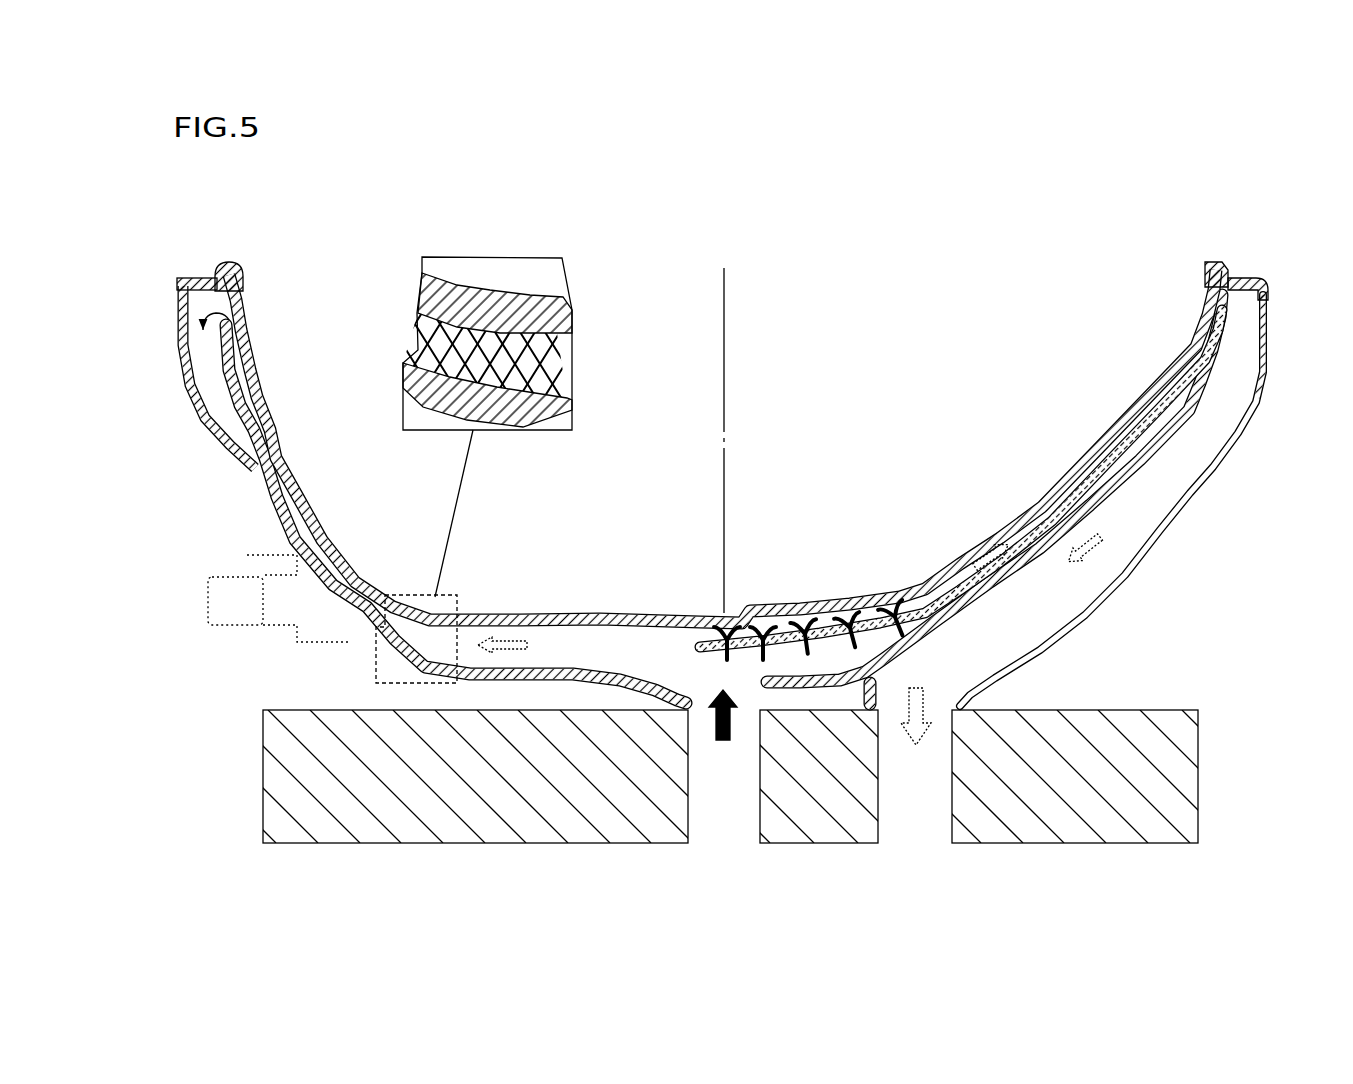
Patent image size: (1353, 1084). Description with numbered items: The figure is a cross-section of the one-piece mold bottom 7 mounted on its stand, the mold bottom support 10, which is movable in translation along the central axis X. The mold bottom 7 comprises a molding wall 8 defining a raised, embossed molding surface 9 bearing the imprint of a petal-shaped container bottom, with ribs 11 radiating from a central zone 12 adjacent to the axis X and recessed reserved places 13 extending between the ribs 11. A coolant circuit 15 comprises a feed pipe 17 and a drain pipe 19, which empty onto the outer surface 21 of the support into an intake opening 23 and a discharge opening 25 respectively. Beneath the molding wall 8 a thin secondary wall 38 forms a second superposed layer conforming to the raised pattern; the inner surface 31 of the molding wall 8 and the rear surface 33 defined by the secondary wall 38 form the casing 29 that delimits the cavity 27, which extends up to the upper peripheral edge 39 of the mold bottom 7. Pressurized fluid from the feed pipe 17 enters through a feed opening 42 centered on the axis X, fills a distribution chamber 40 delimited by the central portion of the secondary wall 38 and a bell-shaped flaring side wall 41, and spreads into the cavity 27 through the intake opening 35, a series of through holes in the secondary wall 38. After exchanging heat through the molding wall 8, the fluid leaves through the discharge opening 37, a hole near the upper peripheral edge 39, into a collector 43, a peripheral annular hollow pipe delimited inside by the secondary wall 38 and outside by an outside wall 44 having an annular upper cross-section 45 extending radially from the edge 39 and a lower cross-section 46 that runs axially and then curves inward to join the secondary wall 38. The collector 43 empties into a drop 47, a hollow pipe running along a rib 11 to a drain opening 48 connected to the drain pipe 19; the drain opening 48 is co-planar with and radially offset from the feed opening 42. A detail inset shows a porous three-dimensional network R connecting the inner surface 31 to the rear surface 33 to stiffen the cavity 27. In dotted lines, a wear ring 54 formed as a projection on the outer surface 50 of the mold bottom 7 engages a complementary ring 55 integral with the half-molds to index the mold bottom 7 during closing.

The mold bottom 7 is at (710, 479).
The molding wall 8 is at (721, 435).
The molding surface 9 is at (716, 488).
The mold bottom support 10 is at (263, 808).
The ribs 11 is at (1058, 477).
The central zone 12 is at (760, 603).
The recessed reserved places 13 is at (490, 454).
The circuit 15 is at (687, 787).
The feed pipe 17 is at (712, 805).
The drain pipe 19 is at (900, 805).
The outer surface 21 is at (471, 846).
The intake opening 23 is at (718, 846).
The discharge opening 25 is at (917, 849).
The cavity 27 is at (706, 495).
The casing 29 is at (275, 500).
The inner surface 31 is at (550, 330).
The rear surface 33 is at (530, 400).
The intake opening 35 is at (720, 648).
The discharge opening 37 is at (222, 302).
The secondary wall 38 is at (262, 481).
The upper peripheral edge 39 is at (244, 272).
The distribution chamber 40 is at (770, 679).
The side wall 41 is at (630, 680).
The feed opening 42 is at (697, 709).
The collector 43 is at (192, 366).
The outside wall 44 is at (177, 344).
The annular upper cross-section 45 is at (205, 278).
The lower cross-section 46 is at (196, 407).
The drop 47 is at (1163, 460).
The drain opening 48 is at (890, 710).
The outer surface 50 is at (272, 530).
The wear ring 54 is at (292, 646).
The complementary ring 55 is at (222, 628).
The central axis X is at (724, 393).
The three-dimensional network R is at (568, 340).